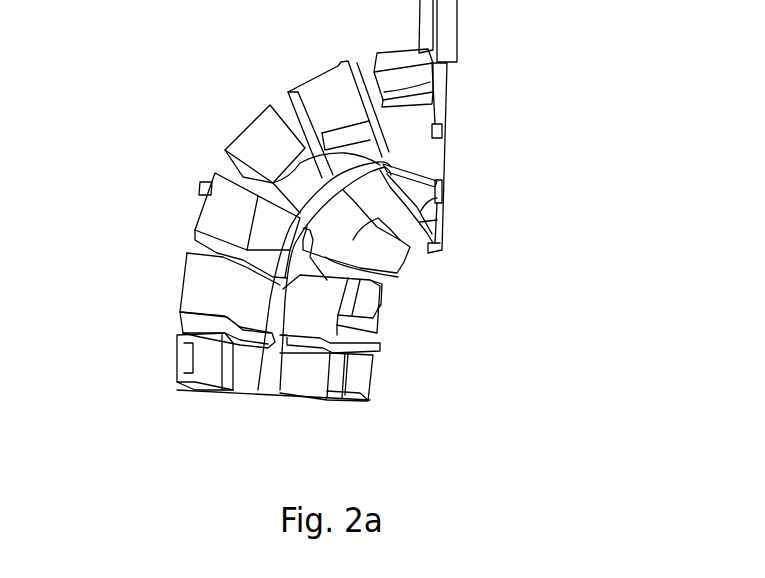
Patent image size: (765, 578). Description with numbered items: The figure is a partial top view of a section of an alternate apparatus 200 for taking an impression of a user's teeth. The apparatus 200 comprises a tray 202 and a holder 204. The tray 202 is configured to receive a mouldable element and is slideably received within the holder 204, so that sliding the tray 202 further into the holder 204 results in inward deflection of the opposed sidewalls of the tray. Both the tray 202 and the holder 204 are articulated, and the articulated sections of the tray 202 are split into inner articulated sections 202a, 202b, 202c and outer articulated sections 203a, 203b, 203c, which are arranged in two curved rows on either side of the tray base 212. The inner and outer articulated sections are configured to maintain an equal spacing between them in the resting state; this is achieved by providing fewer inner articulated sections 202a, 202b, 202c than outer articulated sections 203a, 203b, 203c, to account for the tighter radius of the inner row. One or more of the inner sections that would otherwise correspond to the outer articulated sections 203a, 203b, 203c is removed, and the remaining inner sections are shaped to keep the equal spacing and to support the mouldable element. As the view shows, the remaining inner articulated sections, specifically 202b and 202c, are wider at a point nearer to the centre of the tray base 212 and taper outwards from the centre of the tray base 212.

The apparatus 200 is at (462, 196).
The tray 202 is at (272, 412).
The inner articulated section 202a is at (353, 365).
The inner articulated section 202b is at (370, 305).
The inner articulated section 202c is at (385, 252).
The outer articulated section 203a is at (203, 363).
The outer articulated section 203b is at (192, 297).
The outer articulated section 203c is at (223, 215).
The holder 204 is at (439, 98).
The tray base 212 is at (256, 388).